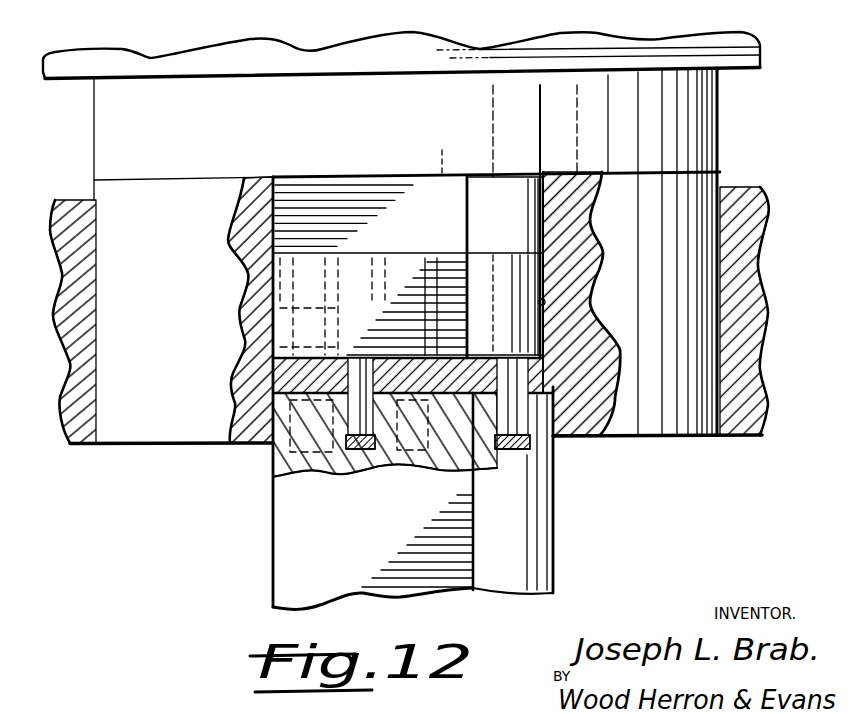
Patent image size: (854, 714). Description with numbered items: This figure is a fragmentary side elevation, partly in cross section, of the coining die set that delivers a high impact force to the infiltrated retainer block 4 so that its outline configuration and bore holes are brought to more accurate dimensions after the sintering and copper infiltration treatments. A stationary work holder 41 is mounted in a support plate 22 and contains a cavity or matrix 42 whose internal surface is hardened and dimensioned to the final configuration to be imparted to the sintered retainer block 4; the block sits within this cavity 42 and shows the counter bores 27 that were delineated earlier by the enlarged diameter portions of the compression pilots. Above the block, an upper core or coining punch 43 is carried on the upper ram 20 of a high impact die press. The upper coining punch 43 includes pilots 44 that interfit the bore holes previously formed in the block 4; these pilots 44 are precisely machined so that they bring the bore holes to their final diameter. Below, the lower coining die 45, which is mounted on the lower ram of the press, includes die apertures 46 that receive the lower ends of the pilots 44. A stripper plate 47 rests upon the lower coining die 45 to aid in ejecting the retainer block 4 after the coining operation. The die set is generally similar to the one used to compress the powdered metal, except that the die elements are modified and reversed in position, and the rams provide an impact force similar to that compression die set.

The upper ram 20 is at (730, 48).
The support plate 22 is at (747, 213).
The upper coining punch 43 is at (688, 130).
The stationary work holder 41 is at (683, 308).
The retainer block 4 is at (548, 262).
The cavity 42 is at (541, 285).
The counter bores 27 is at (475, 298).
The stripper plate 47 is at (292, 384).
The pilots 44 is at (357, 413).
The lower coining die 45 is at (530, 548).
The die apertures 46 is at (362, 442).